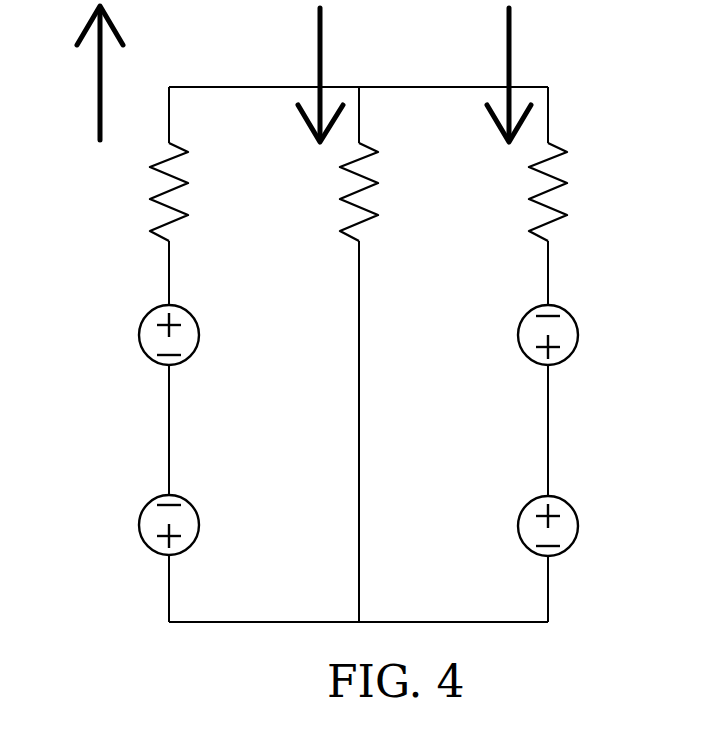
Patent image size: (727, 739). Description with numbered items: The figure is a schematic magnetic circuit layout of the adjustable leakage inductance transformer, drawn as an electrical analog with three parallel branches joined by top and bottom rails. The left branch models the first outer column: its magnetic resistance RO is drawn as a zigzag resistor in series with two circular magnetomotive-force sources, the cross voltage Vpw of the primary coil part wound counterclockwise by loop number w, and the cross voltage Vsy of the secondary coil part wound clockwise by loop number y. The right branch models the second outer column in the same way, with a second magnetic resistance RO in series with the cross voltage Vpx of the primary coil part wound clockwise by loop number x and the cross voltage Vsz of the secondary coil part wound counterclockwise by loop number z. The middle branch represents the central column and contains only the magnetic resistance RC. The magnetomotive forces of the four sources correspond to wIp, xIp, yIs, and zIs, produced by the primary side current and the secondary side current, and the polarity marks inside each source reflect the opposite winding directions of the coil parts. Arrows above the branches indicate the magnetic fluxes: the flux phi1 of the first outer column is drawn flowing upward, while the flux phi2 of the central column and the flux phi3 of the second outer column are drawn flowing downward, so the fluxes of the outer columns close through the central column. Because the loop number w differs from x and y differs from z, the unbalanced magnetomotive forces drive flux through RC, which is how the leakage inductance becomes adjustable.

The magnetic flux of the first outer column phi1 is at (81, 73).
The magnetic flux of the central column phi2 is at (301, 75).
The magnetic flux of the second outer column phi3 is at (490, 75).
The magnetic resistance of the outer columns RO is at (333, 192).
The magnetic resistance of the central column RC is at (333, 192).
The cross voltage of primary side coil part with loop number w Vpw is at (171, 335).
The cross voltage of secondary side coil part with loop number y Vsy is at (168, 525).
The cross voltage of primary side coil part with loop number x Vpx is at (540, 335).
The cross voltage of secondary side coil part with loop number z Vsz is at (539, 526).